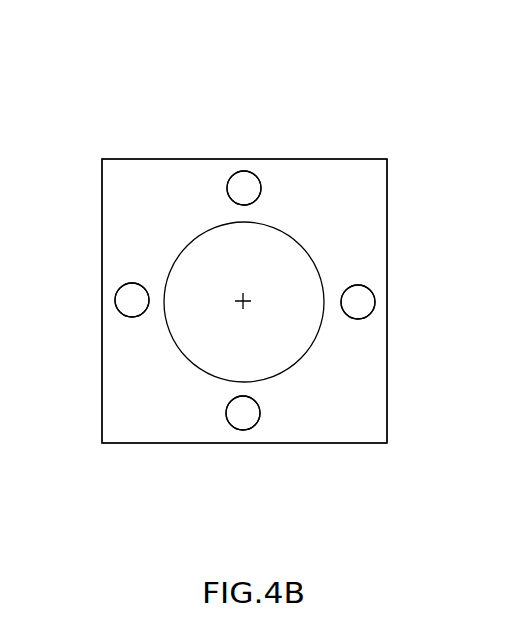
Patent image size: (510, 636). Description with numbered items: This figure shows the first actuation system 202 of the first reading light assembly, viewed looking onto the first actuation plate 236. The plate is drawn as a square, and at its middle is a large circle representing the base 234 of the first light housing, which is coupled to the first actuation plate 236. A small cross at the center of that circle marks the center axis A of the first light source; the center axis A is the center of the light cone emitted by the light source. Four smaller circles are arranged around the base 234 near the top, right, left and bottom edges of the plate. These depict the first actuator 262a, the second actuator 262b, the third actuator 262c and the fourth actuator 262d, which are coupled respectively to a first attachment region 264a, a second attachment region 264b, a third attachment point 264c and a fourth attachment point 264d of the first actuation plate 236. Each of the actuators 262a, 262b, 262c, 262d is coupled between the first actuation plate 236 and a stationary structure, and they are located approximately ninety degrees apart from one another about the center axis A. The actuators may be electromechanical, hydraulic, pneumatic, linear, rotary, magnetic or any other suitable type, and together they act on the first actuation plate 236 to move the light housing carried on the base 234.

The first actuation system 202 is at (358, 82).
The first actuation plate 236 is at (368, 180).
The base 234 is at (272, 258).
The center axis A is at (236, 297).
The first actuator 262a is at (360, 303).
The second actuator 262b is at (247, 187).
The third actuator 262c is at (127, 302).
The fourth actuator 262d is at (245, 418).
The first attachment region 264a is at (364, 279).
The second attachment region 264b is at (222, 182).
The third attachment point 264c is at (119, 319).
The fourth attachment point 264d is at (266, 421).